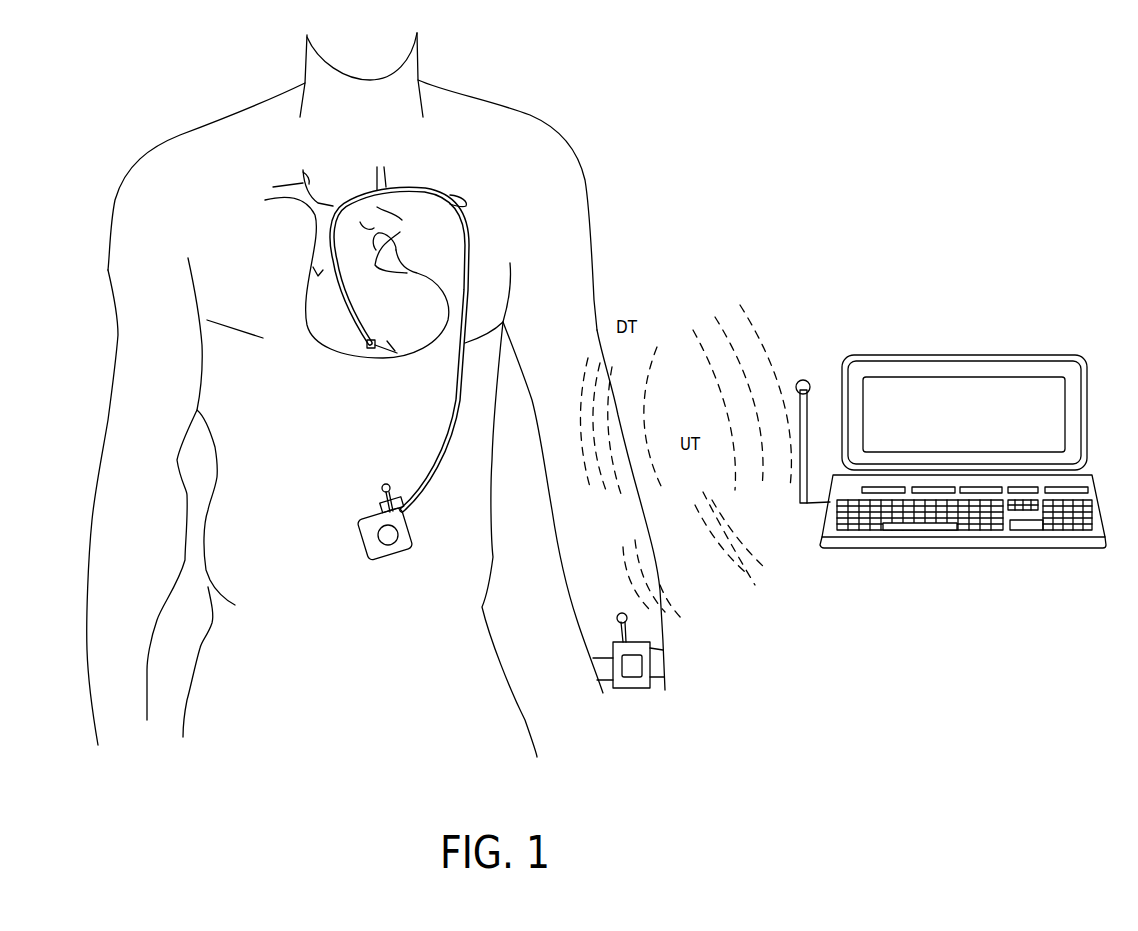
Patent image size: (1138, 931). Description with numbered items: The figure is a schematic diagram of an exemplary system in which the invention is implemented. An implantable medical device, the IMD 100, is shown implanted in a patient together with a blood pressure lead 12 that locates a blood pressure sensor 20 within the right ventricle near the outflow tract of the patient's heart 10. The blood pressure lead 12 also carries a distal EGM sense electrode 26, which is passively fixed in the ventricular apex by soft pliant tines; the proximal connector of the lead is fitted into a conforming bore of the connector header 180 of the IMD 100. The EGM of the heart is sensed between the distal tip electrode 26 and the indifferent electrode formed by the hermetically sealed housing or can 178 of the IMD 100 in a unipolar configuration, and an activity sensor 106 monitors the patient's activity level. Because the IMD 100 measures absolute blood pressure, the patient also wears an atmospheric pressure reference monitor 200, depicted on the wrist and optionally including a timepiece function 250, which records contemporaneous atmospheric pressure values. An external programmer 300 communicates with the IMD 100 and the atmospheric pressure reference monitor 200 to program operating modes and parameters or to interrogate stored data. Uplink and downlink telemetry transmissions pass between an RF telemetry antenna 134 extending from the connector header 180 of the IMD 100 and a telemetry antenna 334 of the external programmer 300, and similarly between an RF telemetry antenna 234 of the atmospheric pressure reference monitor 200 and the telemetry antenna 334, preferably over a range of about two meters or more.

The heart 10 is at (310, 290).
The blood pressure lead 12 is at (452, 422).
The blood pressure sensor 20 is at (363, 350).
The distal EGM sense electrode 26 is at (393, 353).
The IMD 100 is at (401, 523).
The activity sensor 106 is at (392, 540).
The RF telemetry antenna 134 is at (382, 486).
The hermetically sealed housing or can 178 is at (410, 534).
The connector header 180 is at (402, 505).
The atmospheric pressure reference monitor 200 is at (665, 671).
The RF telemetry antenna 234 is at (637, 625).
The timepiece function 250 is at (643, 663).
The external programmer 300 is at (951, 432).
The telemetry antenna 334 is at (803, 380).